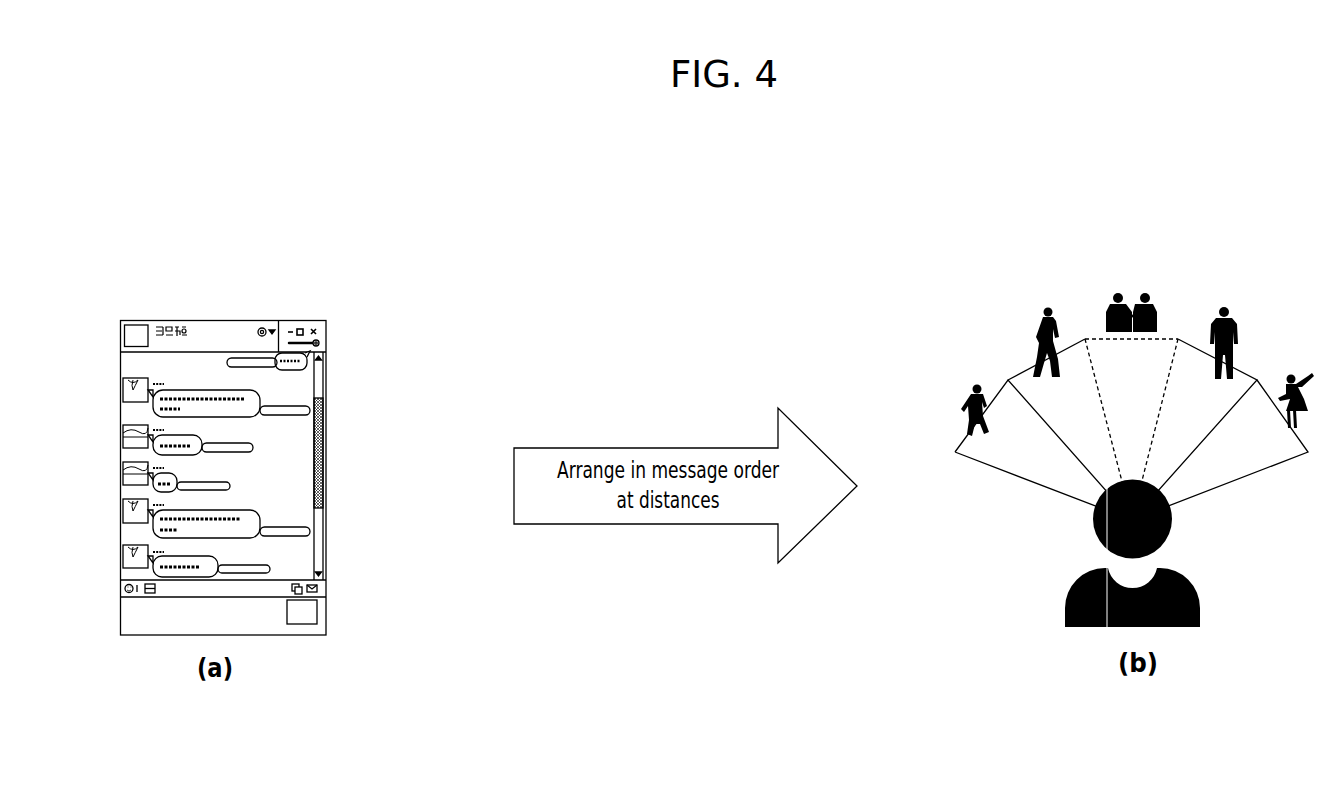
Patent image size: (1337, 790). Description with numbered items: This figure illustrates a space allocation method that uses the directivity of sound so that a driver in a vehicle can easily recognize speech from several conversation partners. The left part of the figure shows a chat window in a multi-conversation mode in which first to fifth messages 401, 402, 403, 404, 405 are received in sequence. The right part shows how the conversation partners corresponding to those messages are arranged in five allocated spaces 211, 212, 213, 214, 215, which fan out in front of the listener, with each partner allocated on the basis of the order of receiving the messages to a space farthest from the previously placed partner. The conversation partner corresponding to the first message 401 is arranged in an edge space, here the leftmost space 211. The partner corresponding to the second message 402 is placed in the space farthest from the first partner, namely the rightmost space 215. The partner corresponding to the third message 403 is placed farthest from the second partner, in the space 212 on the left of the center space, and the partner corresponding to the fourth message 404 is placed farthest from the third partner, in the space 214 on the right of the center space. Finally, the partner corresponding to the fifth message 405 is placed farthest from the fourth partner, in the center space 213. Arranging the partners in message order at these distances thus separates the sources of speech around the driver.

The leftmost space 211 is at (1043, 450).
The space on the left of the center space 212 is at (1070, 429).
The center space 213 is at (1131, 429).
The space on the right of the center space 214 is at (1194, 429).
The rightmost space 215 is at (1220, 450).
The first message 401 is at (250, 400).
The second message 402 is at (198, 442).
The third message 403 is at (170, 477).
The fourth message 404 is at (250, 522).
The fifth message 405 is at (210, 560).